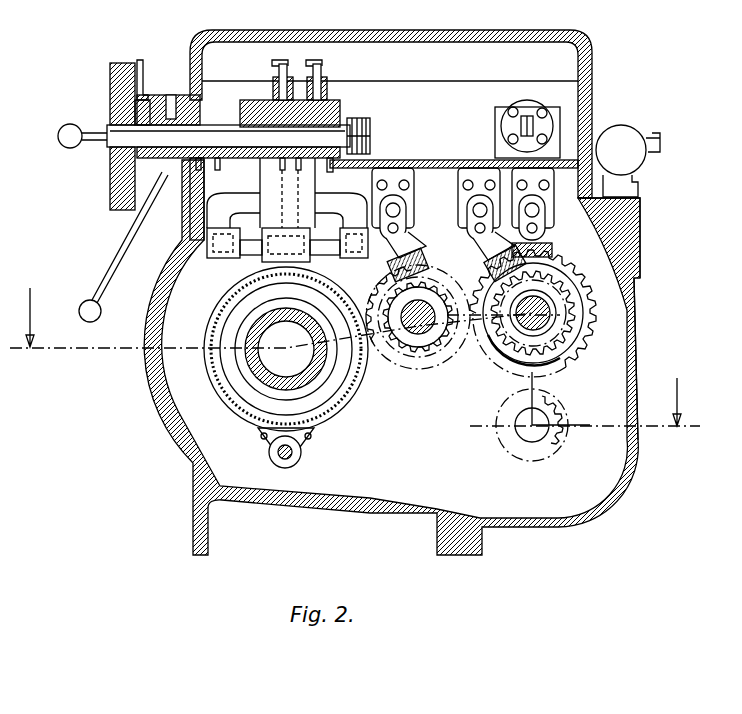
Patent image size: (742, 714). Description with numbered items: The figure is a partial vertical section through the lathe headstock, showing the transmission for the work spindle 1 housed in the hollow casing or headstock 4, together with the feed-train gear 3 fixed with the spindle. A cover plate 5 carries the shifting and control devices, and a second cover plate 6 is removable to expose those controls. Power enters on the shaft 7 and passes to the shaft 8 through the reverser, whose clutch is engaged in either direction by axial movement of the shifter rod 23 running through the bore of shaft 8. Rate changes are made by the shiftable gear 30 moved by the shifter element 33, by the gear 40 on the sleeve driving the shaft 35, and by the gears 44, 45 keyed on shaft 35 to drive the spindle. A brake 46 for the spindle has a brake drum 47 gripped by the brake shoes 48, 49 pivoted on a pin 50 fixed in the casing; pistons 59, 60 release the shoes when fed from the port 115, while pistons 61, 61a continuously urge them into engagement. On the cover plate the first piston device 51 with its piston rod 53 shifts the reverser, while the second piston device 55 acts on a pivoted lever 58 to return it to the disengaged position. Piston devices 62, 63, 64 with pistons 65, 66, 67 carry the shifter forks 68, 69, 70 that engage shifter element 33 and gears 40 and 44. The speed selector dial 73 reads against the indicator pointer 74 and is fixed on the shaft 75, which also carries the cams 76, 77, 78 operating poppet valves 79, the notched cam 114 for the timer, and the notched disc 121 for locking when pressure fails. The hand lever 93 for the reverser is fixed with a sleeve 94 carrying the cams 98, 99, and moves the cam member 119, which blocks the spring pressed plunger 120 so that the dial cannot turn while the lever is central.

The work spindle 1 is at (262, 357).
The gear 3 is at (355, 346).
The hollow casing or headstock 4 is at (640, 263).
The cover plate 5 is at (590, 108).
The cover plate 6 is at (590, 68).
The shaft 7 is at (532, 440).
The shaft 8 is at (548, 311).
The shifter rod 23 is at (548, 324).
The gear 30 is at (556, 301).
The shifter element 33 is at (560, 353).
The shaft 35 is at (418, 340).
The gear 40 is at (640, 219).
The gear 44 is at (421, 334).
The gear 45 is at (440, 345).
The brake 46 is at (192, 466).
The brake drum 47 is at (230, 420).
The brake shoe 48 is at (206, 360).
The brake shoe 49 is at (364, 377).
The pin 50 is at (298, 452).
The first piston device 51 is at (518, 105).
The piston rod 53 is at (528, 118).
The second piston device 55 is at (627, 145).
The pivoted lever 58 is at (597, 134).
The piston 59 is at (287, 210).
The piston 60 is at (300, 232).
The piston 61 is at (240, 252).
The piston 61a is at (341, 210).
The piston device 62 is at (476, 183).
The piston device 63 is at (516, 193).
The piston device 64 is at (393, 183).
The piston 65 is at (418, 256).
The piston 66 is at (540, 211).
The piston 67 is at (398, 210).
The shifter fork 68 is at (488, 262).
The shifter fork 69 is at (552, 250).
The shifter fork 70 is at (475, 210).
The speed selector dial 73 is at (113, 88).
The indicator pointer 74 is at (139, 62).
The shaft 75 is at (122, 138).
The cam 76 is at (298, 170).
The cam 77 is at (282, 170).
The cam 78 is at (330, 172).
The poppet valves 79 is at (300, 82).
The hand lever 93 is at (80, 311).
The sleeve 94 is at (182, 177).
The cam 98 is at (218, 170).
The cam 99 is at (199, 170).
The notched cam 114 is at (354, 133).
The port 115 is at (233, 210).
The cam member 119 is at (173, 97).
The spring pressed plunger 120 is at (108, 76).
The disc 121 is at (258, 108).